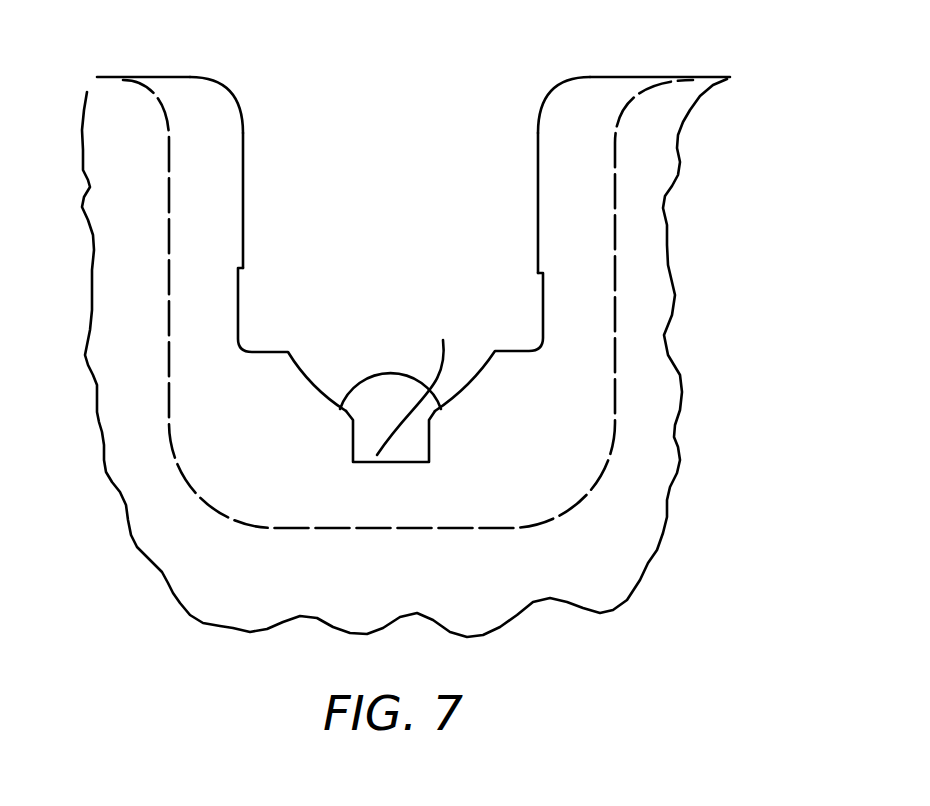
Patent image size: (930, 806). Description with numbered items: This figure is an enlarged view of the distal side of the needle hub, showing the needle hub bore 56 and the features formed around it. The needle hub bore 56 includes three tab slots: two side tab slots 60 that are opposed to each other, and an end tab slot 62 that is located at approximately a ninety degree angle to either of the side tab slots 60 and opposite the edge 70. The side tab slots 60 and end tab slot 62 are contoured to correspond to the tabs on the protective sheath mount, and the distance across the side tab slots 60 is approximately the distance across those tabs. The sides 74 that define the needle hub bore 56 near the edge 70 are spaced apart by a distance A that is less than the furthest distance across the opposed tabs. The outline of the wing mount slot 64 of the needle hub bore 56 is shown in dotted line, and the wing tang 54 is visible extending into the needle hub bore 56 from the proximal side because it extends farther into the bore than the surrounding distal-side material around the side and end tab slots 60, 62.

The edge 70 is at (617, 78).
The needle hub bore 56 is at (243, 134).
The sides 74 is at (243, 242).
The side tab slots 60 is at (243, 305).
The wing tang 54 is at (365, 390).
The end tab slot 62 is at (420, 378).
The wing mount slot 64 is at (615, 430).